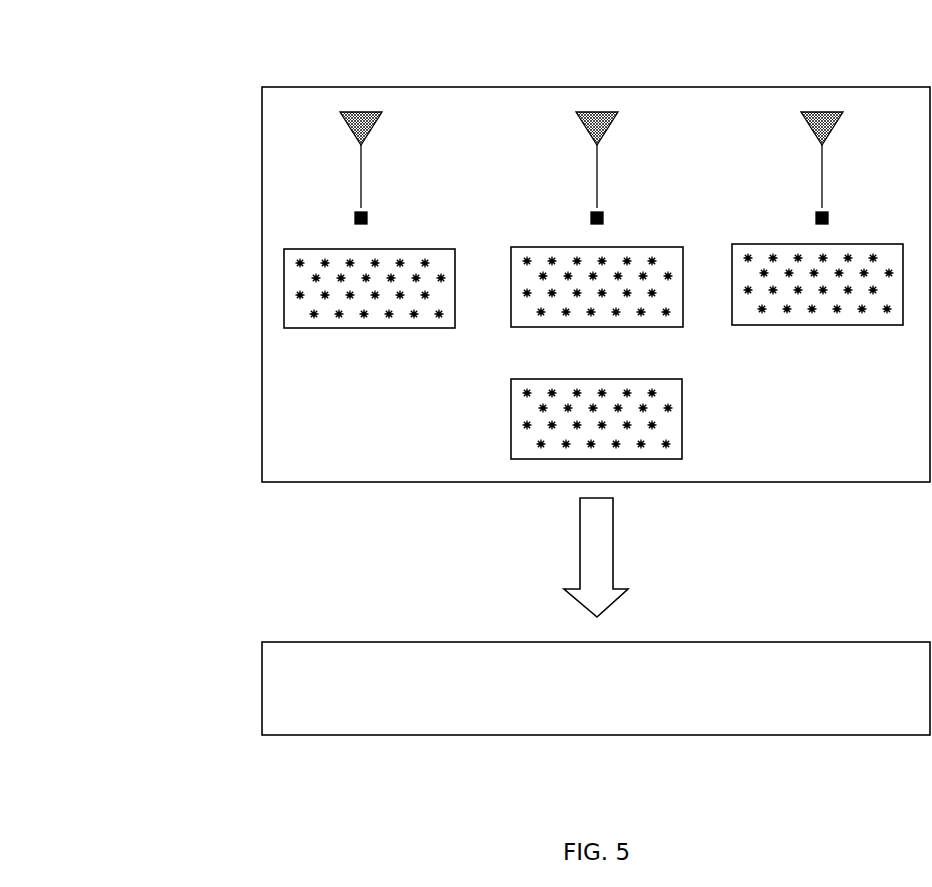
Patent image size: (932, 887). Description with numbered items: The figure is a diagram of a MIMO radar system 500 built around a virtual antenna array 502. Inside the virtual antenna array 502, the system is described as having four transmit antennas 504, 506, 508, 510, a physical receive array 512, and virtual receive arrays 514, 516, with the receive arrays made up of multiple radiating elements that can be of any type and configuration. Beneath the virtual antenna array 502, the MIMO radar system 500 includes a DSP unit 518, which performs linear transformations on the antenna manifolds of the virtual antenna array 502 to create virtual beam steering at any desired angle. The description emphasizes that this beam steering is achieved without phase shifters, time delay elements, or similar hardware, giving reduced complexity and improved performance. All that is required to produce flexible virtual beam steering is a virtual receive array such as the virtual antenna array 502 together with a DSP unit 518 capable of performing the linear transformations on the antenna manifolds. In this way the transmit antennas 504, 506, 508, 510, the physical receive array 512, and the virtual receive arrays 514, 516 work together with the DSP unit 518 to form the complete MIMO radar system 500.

The MIMO radar system 500 is at (174, 53).
The virtual antenna array 502 is at (262, 185).
The transmit antenna 504 is at (358, 112).
The transmit antenna 506 is at (597, 182).
The transmit antenna 508 is at (822, 188).
The transmit antenna 510 is at (285, 300).
The physical receive array 512 is at (557, 247).
The virtual receive array 514 is at (768, 244).
The virtual receive array 516 is at (515, 418).
The DSP unit 518 is at (262, 671).